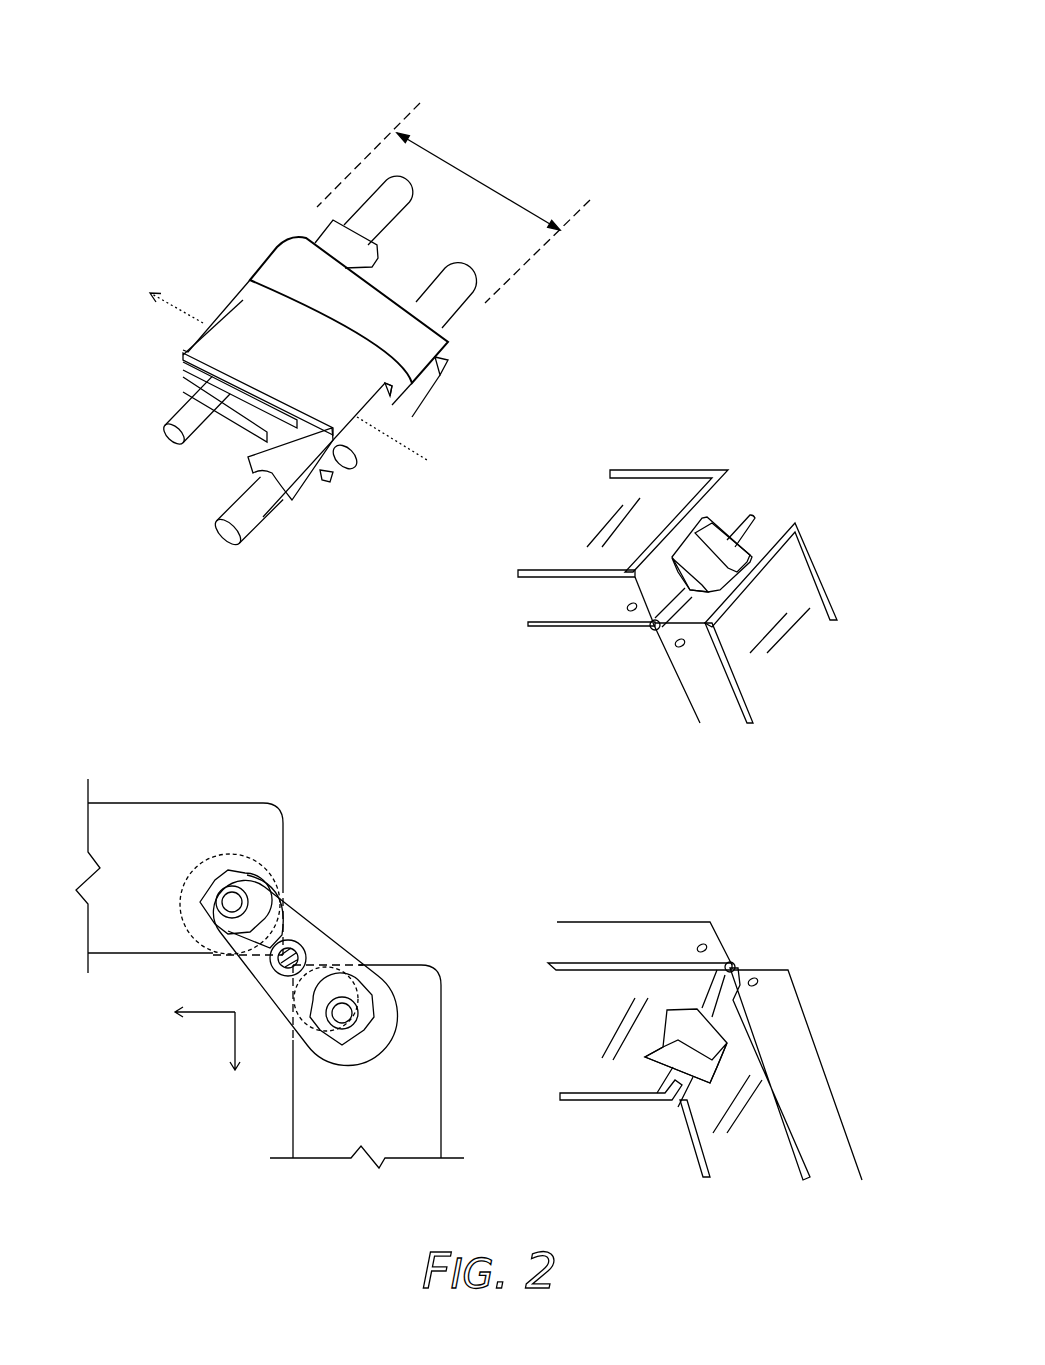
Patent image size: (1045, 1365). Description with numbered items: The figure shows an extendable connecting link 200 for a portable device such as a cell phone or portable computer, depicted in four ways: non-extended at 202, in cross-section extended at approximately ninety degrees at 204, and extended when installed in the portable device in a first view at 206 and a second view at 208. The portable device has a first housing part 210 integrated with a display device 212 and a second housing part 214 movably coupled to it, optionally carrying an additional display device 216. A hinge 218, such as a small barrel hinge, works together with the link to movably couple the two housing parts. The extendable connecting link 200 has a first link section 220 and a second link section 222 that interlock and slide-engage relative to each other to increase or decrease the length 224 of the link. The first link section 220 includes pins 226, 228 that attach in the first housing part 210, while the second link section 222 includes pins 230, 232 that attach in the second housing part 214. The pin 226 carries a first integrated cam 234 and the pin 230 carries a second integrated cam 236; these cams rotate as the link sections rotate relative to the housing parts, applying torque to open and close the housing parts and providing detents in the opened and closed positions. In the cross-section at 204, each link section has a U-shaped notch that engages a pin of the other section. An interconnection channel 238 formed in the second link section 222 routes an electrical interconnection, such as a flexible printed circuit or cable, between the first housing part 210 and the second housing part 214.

The extendable connecting link 200 is at (762, 105).
The non-extended view 202 is at (458, 106).
The extended cross-section view 204 is at (304, 739).
The first extended view in portable device 206 is at (778, 475).
The second extended view in portable device 208 is at (777, 876).
The first housing part 210 is at (588, 623).
The display device 212 is at (658, 492).
The second housing part 214 is at (685, 697).
The additional display device 216 is at (795, 578).
The hinge 218 is at (655, 628).
The first link section 220 is at (275, 248).
The second link section 222 is at (412, 410).
The length 224 is at (528, 169).
The pin 226 is at (370, 193).
The pin 228 is at (183, 407).
The pin 230 is at (253, 530).
The pin 232 is at (458, 307).
The first integrated cam 234 is at (317, 230).
The second integrated cam 236 is at (307, 497).
The interconnection channel 238 is at (353, 432).